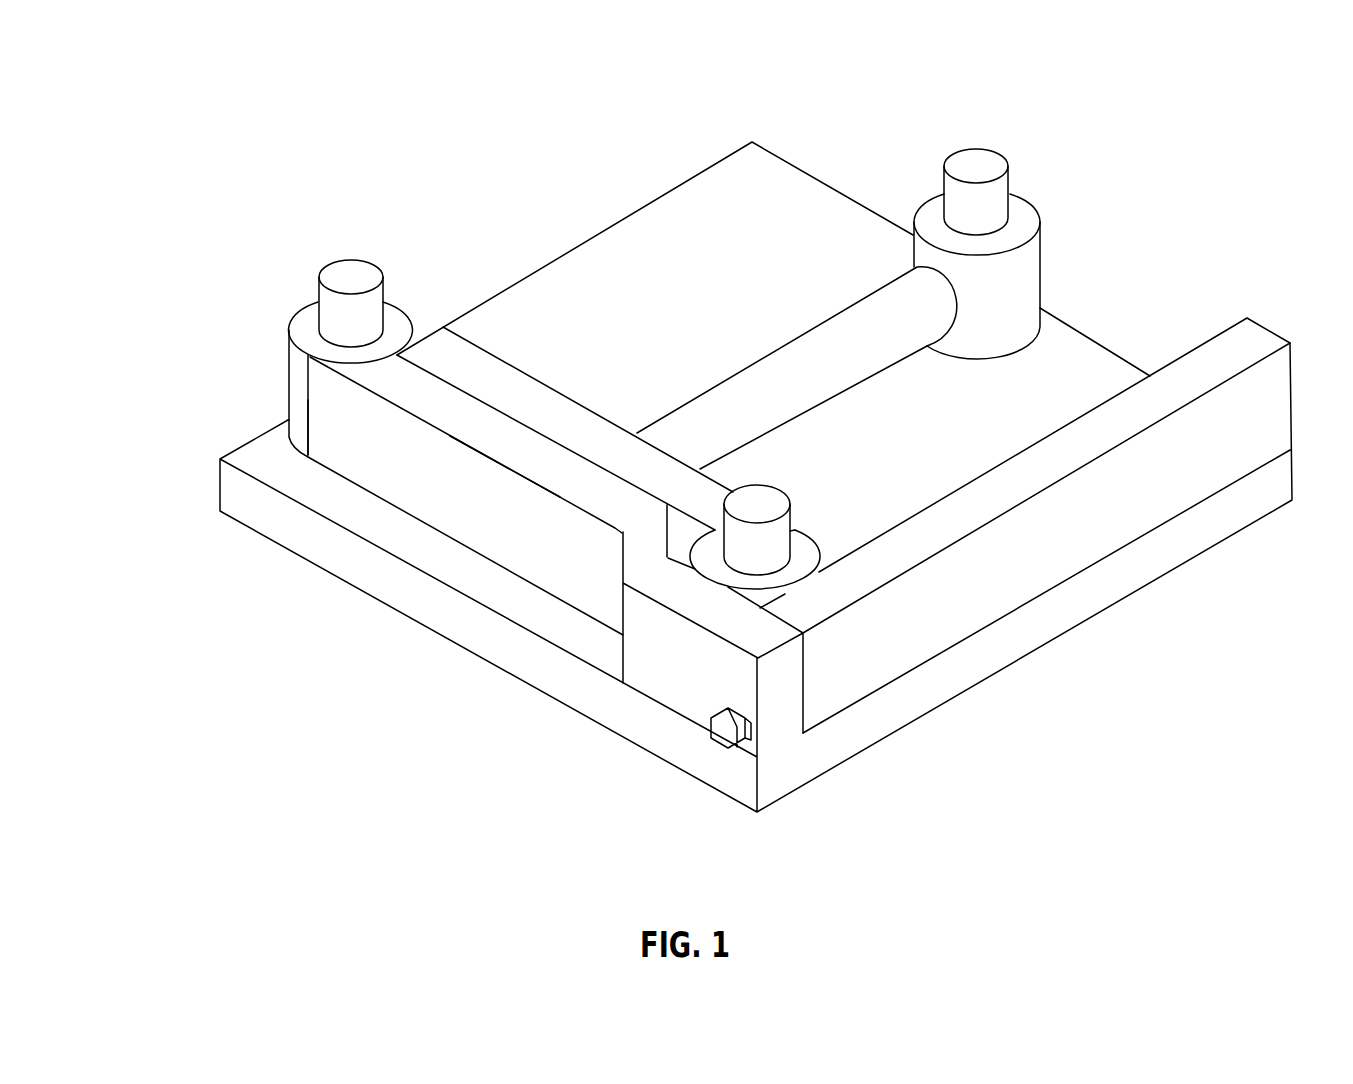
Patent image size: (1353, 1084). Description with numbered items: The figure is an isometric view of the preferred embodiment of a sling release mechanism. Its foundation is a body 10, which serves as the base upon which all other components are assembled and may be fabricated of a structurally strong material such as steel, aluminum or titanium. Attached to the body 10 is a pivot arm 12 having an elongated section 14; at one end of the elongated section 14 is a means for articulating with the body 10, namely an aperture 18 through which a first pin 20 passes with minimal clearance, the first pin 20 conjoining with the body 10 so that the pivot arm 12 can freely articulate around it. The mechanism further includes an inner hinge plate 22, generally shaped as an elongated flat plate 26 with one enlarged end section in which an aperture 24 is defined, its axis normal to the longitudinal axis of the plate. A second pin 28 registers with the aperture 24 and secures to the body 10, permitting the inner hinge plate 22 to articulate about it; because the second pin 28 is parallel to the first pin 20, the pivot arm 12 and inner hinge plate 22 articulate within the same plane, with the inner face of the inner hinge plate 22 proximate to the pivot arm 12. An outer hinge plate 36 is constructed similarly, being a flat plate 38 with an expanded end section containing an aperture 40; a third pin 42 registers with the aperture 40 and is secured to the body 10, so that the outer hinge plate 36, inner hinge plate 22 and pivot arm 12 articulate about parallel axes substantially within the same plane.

The body 10 is at (600, 303).
The pivot arm 12 is at (1070, 234).
The elongated section 14 is at (837, 348).
The aperture 18 is at (1012, 201).
The first pin 20 is at (972, 167).
The inner hinge plate 22 is at (598, 450).
The aperture 24 is at (793, 552).
The flat plate 26 is at (660, 478).
The second pin 28 is at (757, 555).
The outer hinge plate 36 is at (397, 436).
The flat plate 38 is at (498, 442).
The aperture 40 is at (289, 302).
The third pin 42 is at (347, 315).